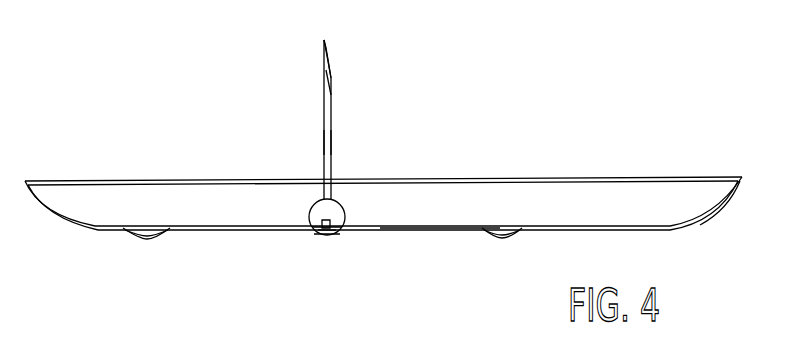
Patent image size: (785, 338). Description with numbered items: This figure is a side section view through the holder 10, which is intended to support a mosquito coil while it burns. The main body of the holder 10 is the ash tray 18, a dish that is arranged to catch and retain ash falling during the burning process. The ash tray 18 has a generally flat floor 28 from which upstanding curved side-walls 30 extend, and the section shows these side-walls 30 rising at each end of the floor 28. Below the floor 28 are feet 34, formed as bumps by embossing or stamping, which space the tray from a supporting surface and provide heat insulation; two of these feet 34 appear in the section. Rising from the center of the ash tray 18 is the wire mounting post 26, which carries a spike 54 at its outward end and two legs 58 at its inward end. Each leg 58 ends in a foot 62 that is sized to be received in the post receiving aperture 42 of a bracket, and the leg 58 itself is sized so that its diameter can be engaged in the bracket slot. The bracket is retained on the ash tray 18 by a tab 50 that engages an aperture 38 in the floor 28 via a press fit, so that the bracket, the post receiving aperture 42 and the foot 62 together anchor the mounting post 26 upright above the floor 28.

The holder 10 is at (497, 44).
The ash tray 18 is at (576, 190).
The wire mounting post 26 is at (333, 98).
The floor 28 is at (441, 231).
The curved side-walls 30 is at (728, 206).
The feet 34 is at (146, 240).
The apertures 38 is at (322, 233).
The post receiving aperture 42 is at (309, 207).
The tab 50 is at (343, 234).
The spike 54 is at (330, 44).
The legs 58 is at (333, 144).
The foot 62 is at (326, 226).